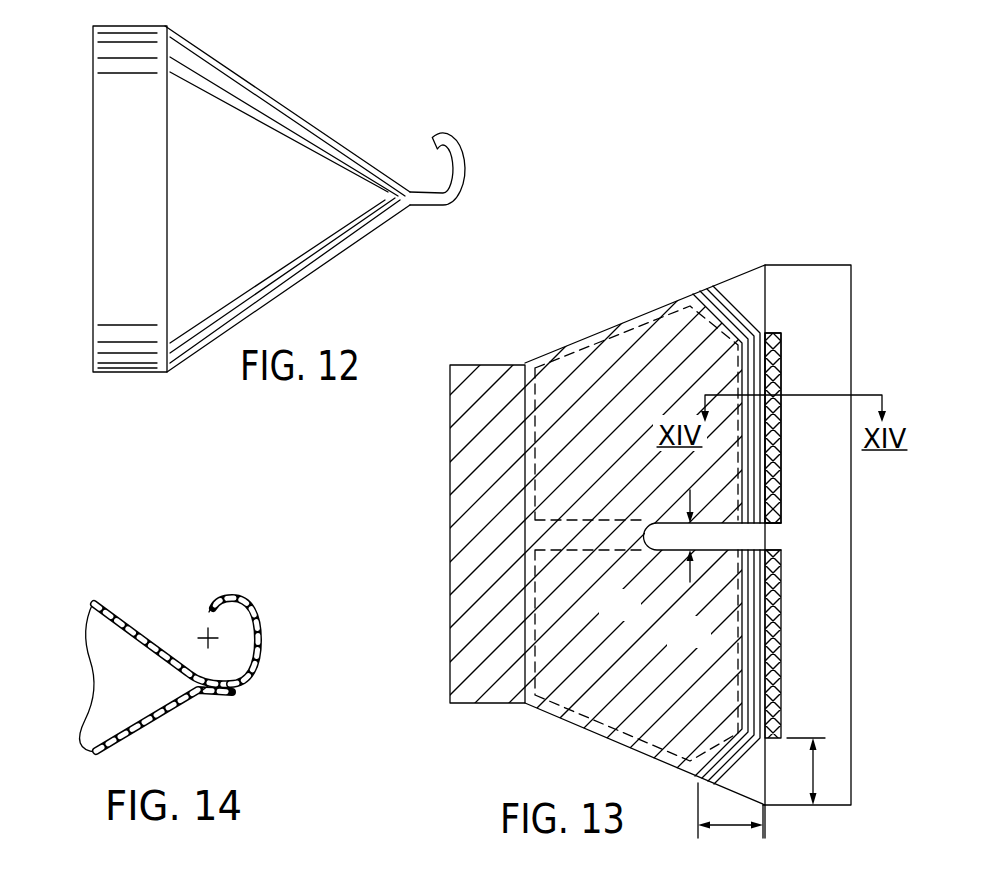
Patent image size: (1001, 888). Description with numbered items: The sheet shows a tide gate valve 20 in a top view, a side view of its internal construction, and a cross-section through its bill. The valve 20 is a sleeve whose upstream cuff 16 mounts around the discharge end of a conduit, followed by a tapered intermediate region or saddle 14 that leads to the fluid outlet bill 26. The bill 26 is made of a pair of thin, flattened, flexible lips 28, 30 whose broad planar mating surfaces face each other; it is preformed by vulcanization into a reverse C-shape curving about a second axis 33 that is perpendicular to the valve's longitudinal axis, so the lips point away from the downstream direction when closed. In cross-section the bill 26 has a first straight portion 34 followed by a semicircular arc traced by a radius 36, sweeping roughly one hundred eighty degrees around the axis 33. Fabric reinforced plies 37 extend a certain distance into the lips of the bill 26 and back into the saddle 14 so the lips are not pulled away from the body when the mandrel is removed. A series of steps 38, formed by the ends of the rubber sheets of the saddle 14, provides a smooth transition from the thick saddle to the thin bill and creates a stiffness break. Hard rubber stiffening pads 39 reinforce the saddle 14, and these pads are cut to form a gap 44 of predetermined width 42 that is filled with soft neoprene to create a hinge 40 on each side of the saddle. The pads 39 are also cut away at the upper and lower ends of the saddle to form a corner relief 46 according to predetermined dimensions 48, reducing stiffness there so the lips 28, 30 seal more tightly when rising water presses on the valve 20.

In FIG. 12, the intermediate region 14 is at (290, 152).
In FIG. 13, the intermediate region 14 is at (622, 340).
In FIG. 12, the cuff 16 is at (113, 143).
In FIG. 13, the cuff 16 is at (488, 372).
In FIG. 12, the tide gate valve 20 is at (279, 76).
In FIG. 12, the bill 26 is at (447, 133).
In FIG. 13, the bill 26 is at (846, 266).
In FIG. 14, the bill 26 is at (260, 630).
In FIG. 13, the lip 28 is at (862, 547).
In FIG. 14, the lip 28 is at (222, 690).
In FIG. 13, the lip 30 is at (900, 617).
In FIG. 14, the lip 30 is at (250, 665).
In FIG. 14, the second axis 33 is at (207, 636).
In FIG. 14, the straight portion 34 is at (205, 692).
In FIG. 14, the radius 36 is at (233, 616).
In FIG. 13, the fabric reinforced plies 37 is at (786, 358).
In FIG. 13, the steps 38 is at (775, 468).
In FIG. 13, the stiffening pads 39 is at (528, 487).
In FIG. 13, the hinge 40 is at (645, 545).
In FIG. 13, the predetermined width 42 is at (693, 497).
In FIG. 13, the gap 44 is at (712, 553).
In FIG. 13, the corner relief 46 is at (738, 306).
In FIG. 13, the predetermined dimensions 48 is at (823, 770).